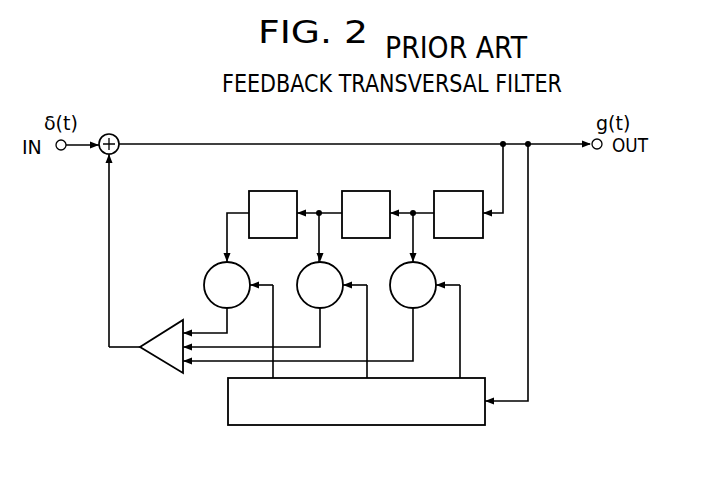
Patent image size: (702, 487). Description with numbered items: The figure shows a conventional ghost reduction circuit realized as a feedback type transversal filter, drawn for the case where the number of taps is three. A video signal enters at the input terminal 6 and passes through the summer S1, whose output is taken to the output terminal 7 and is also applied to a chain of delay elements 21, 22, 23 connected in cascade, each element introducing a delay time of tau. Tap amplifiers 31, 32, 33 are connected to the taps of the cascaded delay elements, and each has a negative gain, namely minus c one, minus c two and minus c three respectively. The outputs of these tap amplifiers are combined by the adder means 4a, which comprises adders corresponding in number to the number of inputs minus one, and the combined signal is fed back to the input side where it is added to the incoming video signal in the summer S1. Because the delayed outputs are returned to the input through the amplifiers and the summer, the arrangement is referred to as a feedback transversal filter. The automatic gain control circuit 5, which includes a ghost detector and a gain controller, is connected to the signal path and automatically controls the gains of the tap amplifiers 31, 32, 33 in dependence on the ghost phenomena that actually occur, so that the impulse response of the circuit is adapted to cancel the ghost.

The input terminal 6 is at (61, 150).
The output terminal 7 is at (597, 149).
The summer S1 is at (112, 134).
The delay element 21 is at (456, 191).
The delay element 22 is at (359, 191).
The delay element 23 is at (266, 191).
The tap amplifier 31 is at (395, 267).
The tap amplifier 32 is at (303, 267).
The tap amplifier 33 is at (212, 267).
The adder means 4a is at (152, 358).
The automatic gain control circuit 5 is at (468, 426).